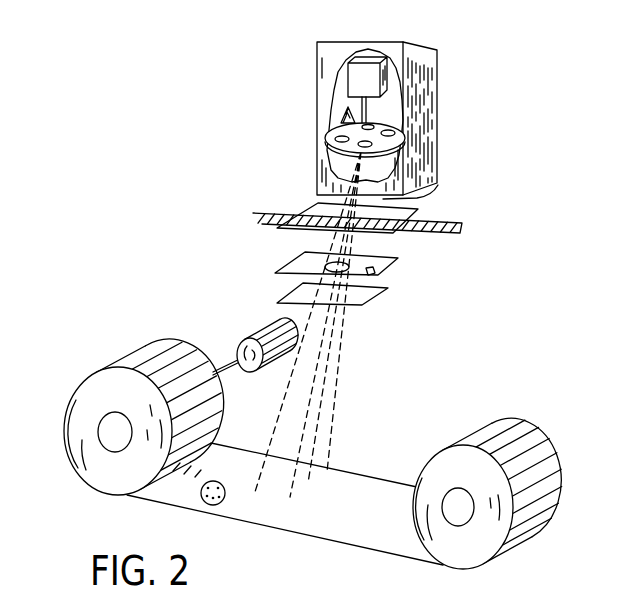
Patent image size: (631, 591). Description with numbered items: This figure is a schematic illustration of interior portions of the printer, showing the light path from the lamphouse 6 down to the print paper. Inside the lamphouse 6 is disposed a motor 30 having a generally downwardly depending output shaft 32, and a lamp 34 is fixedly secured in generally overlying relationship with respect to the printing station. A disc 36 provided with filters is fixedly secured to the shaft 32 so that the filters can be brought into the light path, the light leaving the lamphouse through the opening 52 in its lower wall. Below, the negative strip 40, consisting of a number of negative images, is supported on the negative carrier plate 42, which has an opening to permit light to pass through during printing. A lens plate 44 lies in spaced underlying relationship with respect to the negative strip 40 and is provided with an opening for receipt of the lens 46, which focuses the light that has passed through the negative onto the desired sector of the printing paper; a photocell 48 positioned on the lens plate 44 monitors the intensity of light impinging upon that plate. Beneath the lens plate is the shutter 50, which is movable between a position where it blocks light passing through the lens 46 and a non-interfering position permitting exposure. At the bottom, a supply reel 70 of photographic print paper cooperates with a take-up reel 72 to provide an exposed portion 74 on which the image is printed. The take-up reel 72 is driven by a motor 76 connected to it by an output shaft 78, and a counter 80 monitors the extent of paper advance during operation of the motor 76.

The light source housing 6 is at (447, 62).
The motor 30 is at (370, 67).
The output shaft 32 is at (368, 109).
The lamp 34 is at (342, 117).
The disc 36 is at (333, 148).
The negative strip 40 is at (438, 228).
The negative carrier plate 42 is at (418, 209).
The lens plate 44 is at (383, 262).
The lens 46 is at (320, 265).
The photocell 48 is at (372, 274).
The shutter 50 is at (368, 298).
The light exit opening 52 is at (428, 183).
The supply reel 70 is at (490, 542).
The take-up reel 72 is at (88, 407).
The exposed portion 74 is at (352, 523).
The motor 76 is at (267, 328).
The output shaft 78 is at (228, 378).
The counter 80 is at (217, 505).